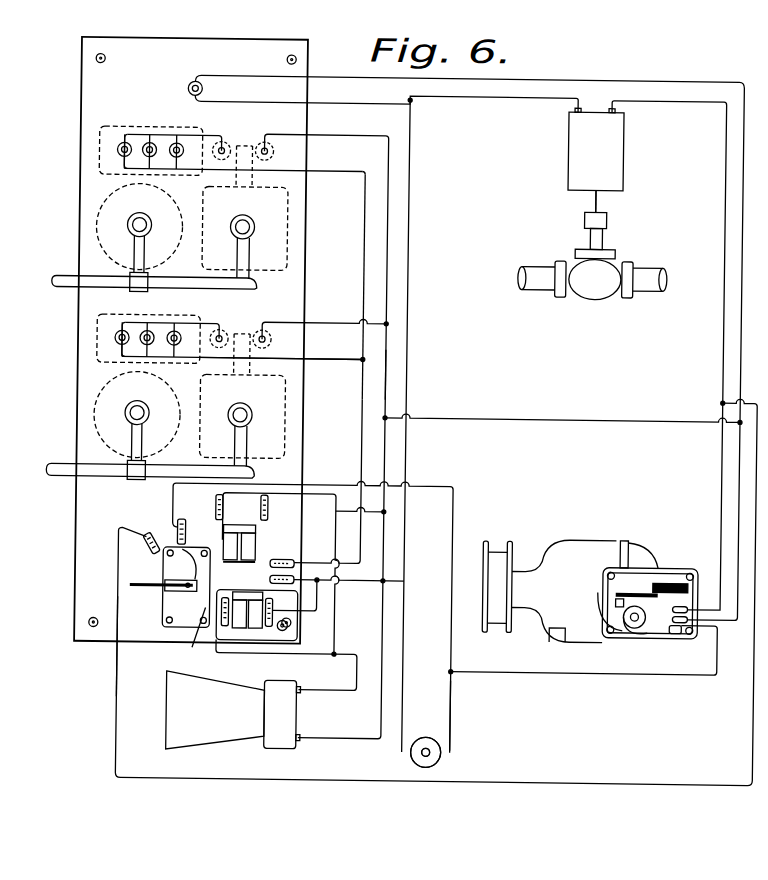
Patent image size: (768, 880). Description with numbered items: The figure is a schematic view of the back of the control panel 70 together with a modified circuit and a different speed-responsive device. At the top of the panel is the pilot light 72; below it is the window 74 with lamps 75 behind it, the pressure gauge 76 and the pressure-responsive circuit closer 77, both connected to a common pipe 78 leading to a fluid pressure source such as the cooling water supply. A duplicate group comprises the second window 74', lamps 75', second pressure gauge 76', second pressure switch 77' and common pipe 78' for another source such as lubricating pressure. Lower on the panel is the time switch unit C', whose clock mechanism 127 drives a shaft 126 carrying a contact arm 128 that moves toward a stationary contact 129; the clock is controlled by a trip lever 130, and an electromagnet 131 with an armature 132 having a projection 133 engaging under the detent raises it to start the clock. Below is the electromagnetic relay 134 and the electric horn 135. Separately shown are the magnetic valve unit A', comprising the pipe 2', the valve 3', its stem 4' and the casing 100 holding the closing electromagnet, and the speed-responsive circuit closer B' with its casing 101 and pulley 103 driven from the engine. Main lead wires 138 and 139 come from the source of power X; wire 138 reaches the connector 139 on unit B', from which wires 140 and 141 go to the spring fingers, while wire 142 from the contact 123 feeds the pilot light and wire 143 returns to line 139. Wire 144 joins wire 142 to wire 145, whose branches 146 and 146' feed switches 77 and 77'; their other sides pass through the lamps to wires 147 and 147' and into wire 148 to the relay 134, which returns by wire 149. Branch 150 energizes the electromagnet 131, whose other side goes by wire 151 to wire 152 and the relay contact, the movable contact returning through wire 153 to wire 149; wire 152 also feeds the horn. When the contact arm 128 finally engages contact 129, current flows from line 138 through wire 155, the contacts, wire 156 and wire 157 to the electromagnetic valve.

The control panel 70 is at (90, 97).
The pilot light 72 is at (184, 89).
The window 74 is at (204, 145).
The lamps 75 is at (114, 149).
The pressure gauge 76 is at (165, 230).
The pressure-responsive circuit closer 77 is at (243, 151).
The common pipe 78 is at (148, 290).
The second window 74' is at (231, 340).
The lamps 75' is at (111, 339).
The second pressure gauge 76' is at (162, 418).
The second pressure switch 77' is at (241, 339).
The common pipe 78' is at (144, 479).
The casing 100 is at (565, 151).
The magnetic valve unit A' is at (621, 215).
The valve stem 4' is at (575, 203).
The valve 3' is at (593, 295).
The pipe 2' is at (592, 296).
The casing 101 is at (584, 591).
The pulley 103 is at (496, 542).
The speed-responsive circuit closer B' is at (599, 511).
The contact 123 is at (684, 575).
The shaft 126 is at (186, 594).
The clock mechanism 127 is at (165, 612).
The contact arm 128 is at (132, 590).
The stationary contact 129 is at (140, 548).
The trip lever 130 is at (195, 533).
The electromagnet 131 is at (254, 547).
The armature 132 is at (268, 560).
The projection 133 is at (189, 635).
The electromagnetic relay 134 is at (337, 599).
The electric horn 135 is at (228, 700).
The main lead wire 138 is at (455, 728).
The main lead wire 139 is at (410, 139).
The wire 140 is at (658, 631).
The wire 141 is at (638, 631).
The wire 142 is at (738, 469).
The wire 143 is at (466, 347).
The wire 144 is at (562, 410).
The wire 145 is at (388, 372).
The branch wire 146 is at (323, 425).
The wire 147 is at (329, 367).
The branch wire 146' is at (325, 321).
The wire 147' is at (280, 372).
The wire 148 is at (362, 418).
The wire 149 is at (392, 581).
The branch wire 150 is at (388, 512).
The wire 151 is at (316, 490).
The wire 152 is at (330, 657).
The wire 153 is at (316, 613).
The wire 155 is at (268, 493).
The wire 156 is at (120, 700).
The wire 157 is at (722, 319).
The time switch unit C' is at (173, 587).
The source of power X is at (440, 763).